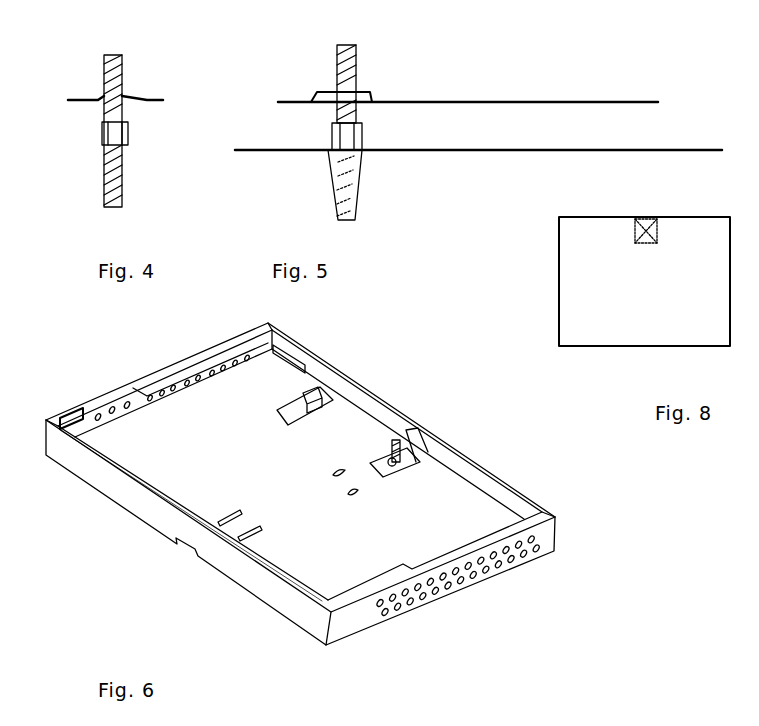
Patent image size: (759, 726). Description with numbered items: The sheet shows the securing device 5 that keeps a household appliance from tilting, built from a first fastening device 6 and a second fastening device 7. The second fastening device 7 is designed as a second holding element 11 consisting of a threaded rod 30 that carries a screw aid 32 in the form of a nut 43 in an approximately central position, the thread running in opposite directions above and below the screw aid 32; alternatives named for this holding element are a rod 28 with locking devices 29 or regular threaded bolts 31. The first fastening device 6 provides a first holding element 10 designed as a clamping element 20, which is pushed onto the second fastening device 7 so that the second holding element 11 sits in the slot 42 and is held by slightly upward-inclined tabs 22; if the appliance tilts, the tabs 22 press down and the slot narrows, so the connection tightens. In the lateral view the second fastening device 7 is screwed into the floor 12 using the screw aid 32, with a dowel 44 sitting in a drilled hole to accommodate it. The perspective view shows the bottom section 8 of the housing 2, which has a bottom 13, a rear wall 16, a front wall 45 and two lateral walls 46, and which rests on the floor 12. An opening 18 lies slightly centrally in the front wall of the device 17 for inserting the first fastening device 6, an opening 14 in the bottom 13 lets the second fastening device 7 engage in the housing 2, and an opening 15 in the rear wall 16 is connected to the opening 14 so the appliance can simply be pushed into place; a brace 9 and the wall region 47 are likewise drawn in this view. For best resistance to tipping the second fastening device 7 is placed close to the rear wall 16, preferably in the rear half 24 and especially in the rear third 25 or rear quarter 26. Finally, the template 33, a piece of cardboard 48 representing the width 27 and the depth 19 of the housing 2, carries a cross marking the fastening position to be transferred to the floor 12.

In FIG. 6, the housing 2 is at (72, 455).
In FIG. 5, the securing device 5 is at (203, 41).
In FIG. 4, the first fastening device 6 is at (73, 97).
In FIG. 5, the first fastening device 6 is at (562, 99).
In FIG. 4, the second fastening device 7 is at (120, 54).
In FIG. 5, the second fastening device 7 is at (357, 56).
In FIG. 6, the second fastening device 7 is at (392, 452).
In FIG. 6, the bottom section 8 is at (152, 502).
In FIG. 6, the retaining tabs 9 is at (243, 522).
In FIG. 4, the first holding element 10 is at (148, 99).
In FIG. 5, the first holding element 10 is at (586, 99).
In FIG. 4, the second holding element 11 is at (112, 57).
In FIG. 5, the second holding element 11 is at (337, 72).
In FIG. 5, the floor 12 is at (442, 152).
In FIG. 6, the bottom 13 is at (200, 464).
In FIG. 6, the opening 14 is at (403, 461).
In FIG. 6, the opening 15 is at (406, 450).
In FIG. 6, the rear wall 16 is at (460, 483).
In FIG. 6, the front wall of the device 17 is at (312, 619).
In FIG. 6, the opening 18 is at (183, 546).
In FIG. 8, the depth 19 is at (543, 222).
In FIG. 5, the clamping element 20 is at (470, 99).
In FIG. 4, the tabs 22 is at (128, 94).
In FIG. 5, the tabs 22 is at (325, 101).
In FIG. 6, the rear half 24 is at (442, 605).
In FIG. 6, the rear third 25 is at (583, 590).
In FIG. 6, the rear quarter 26 is at (558, 647).
In FIG. 8, the width 27 is at (560, 206).
In FIG. 4, the rod 28 is at (127, 197).
In FIG. 4, the locking devices 29 is at (103, 193).
In FIG. 4, the threaded rod 30 is at (103, 168).
In FIG. 5, the threaded rod 30 is at (370, 91).
In FIG. 4, the threaded bolts 31 is at (127, 177).
In FIG. 4, the screw aid 32 is at (128, 140).
In FIG. 5, the screw aid 32 is at (335, 137).
In FIG. 8, the template 33 is at (628, 300).
In FIG. 4, the slot 42 is at (102, 118).
In FIG. 4, the nut 43 is at (128, 127).
In FIG. 5, the dowel 44 is at (358, 193).
In FIG. 6, the front wall 45 is at (260, 580).
In FIG. 6, the lateral walls 46 is at (122, 398).
In FIG. 6, the rear wall 47 is at (483, 481).
In FIG. 8, the cardboard 48 is at (643, 272).